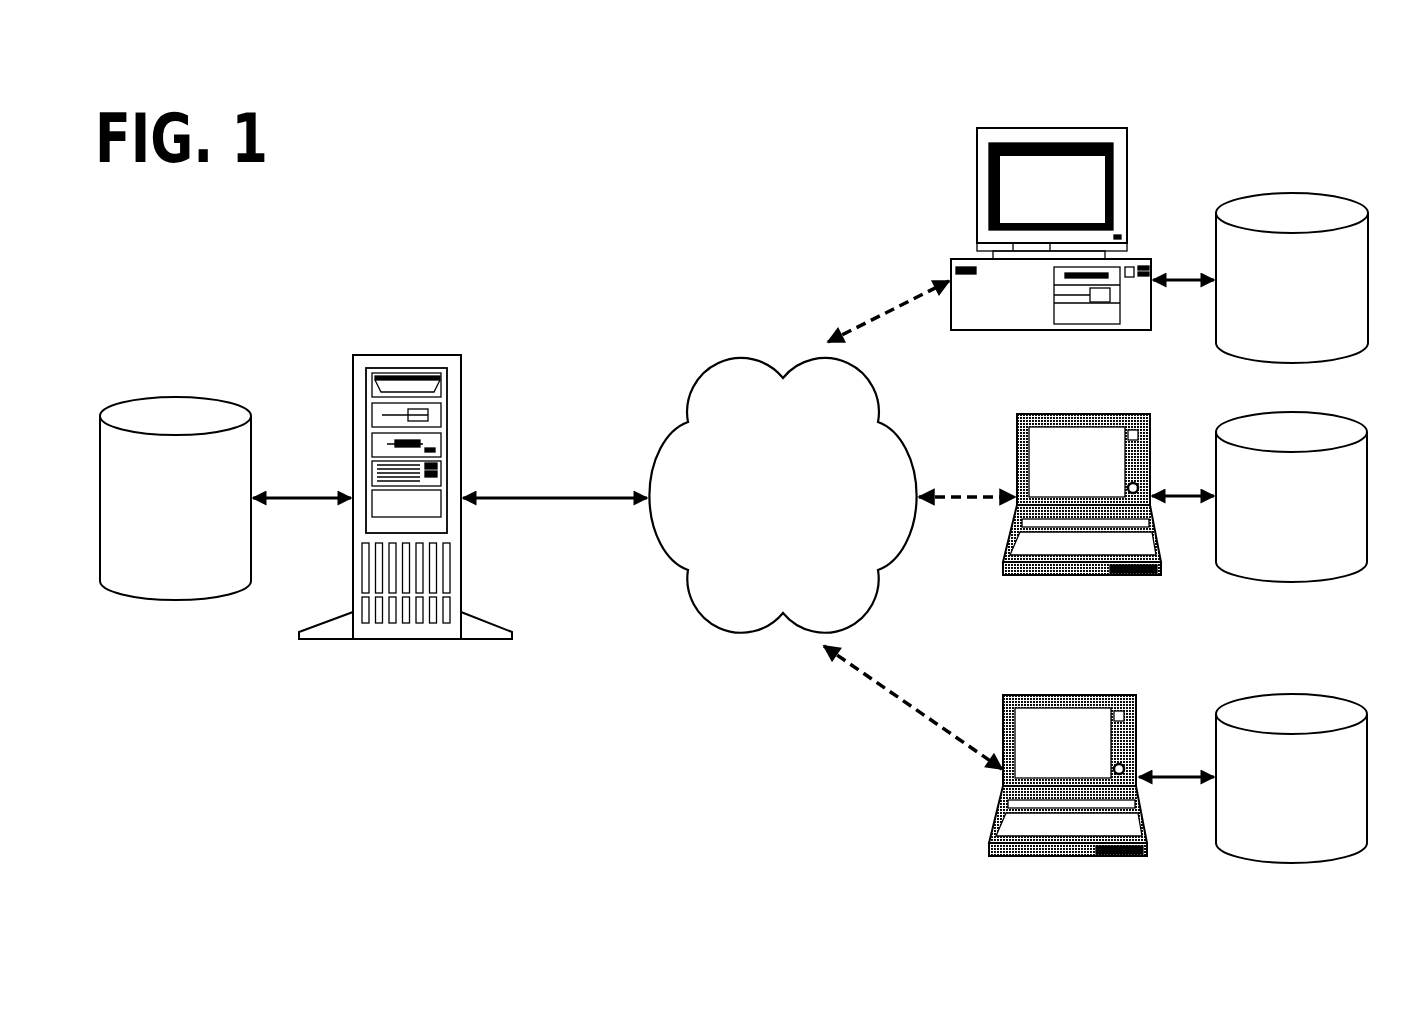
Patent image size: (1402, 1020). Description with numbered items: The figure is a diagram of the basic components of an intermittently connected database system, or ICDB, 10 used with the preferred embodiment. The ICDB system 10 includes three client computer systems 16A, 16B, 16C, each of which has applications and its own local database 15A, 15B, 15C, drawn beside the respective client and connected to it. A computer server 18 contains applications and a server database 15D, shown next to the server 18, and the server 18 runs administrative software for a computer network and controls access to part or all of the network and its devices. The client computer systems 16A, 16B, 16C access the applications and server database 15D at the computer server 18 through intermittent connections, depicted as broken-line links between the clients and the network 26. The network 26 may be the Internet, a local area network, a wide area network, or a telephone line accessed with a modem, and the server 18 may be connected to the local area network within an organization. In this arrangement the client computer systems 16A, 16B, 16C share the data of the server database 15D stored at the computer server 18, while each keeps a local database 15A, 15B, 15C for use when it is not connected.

The intermittently connected database system 10 is at (500, 237).
The local database 15A is at (1293, 193).
The local database 15B is at (1292, 413).
The local database 15C is at (1290, 695).
The server database 15D is at (175, 398).
The client computer system 16A is at (1052, 128).
The client computer system 16B is at (1083, 414).
The client computer system 16C is at (1070, 695).
The computer server 18 is at (407, 355).
The wide area network 26 is at (745, 347).